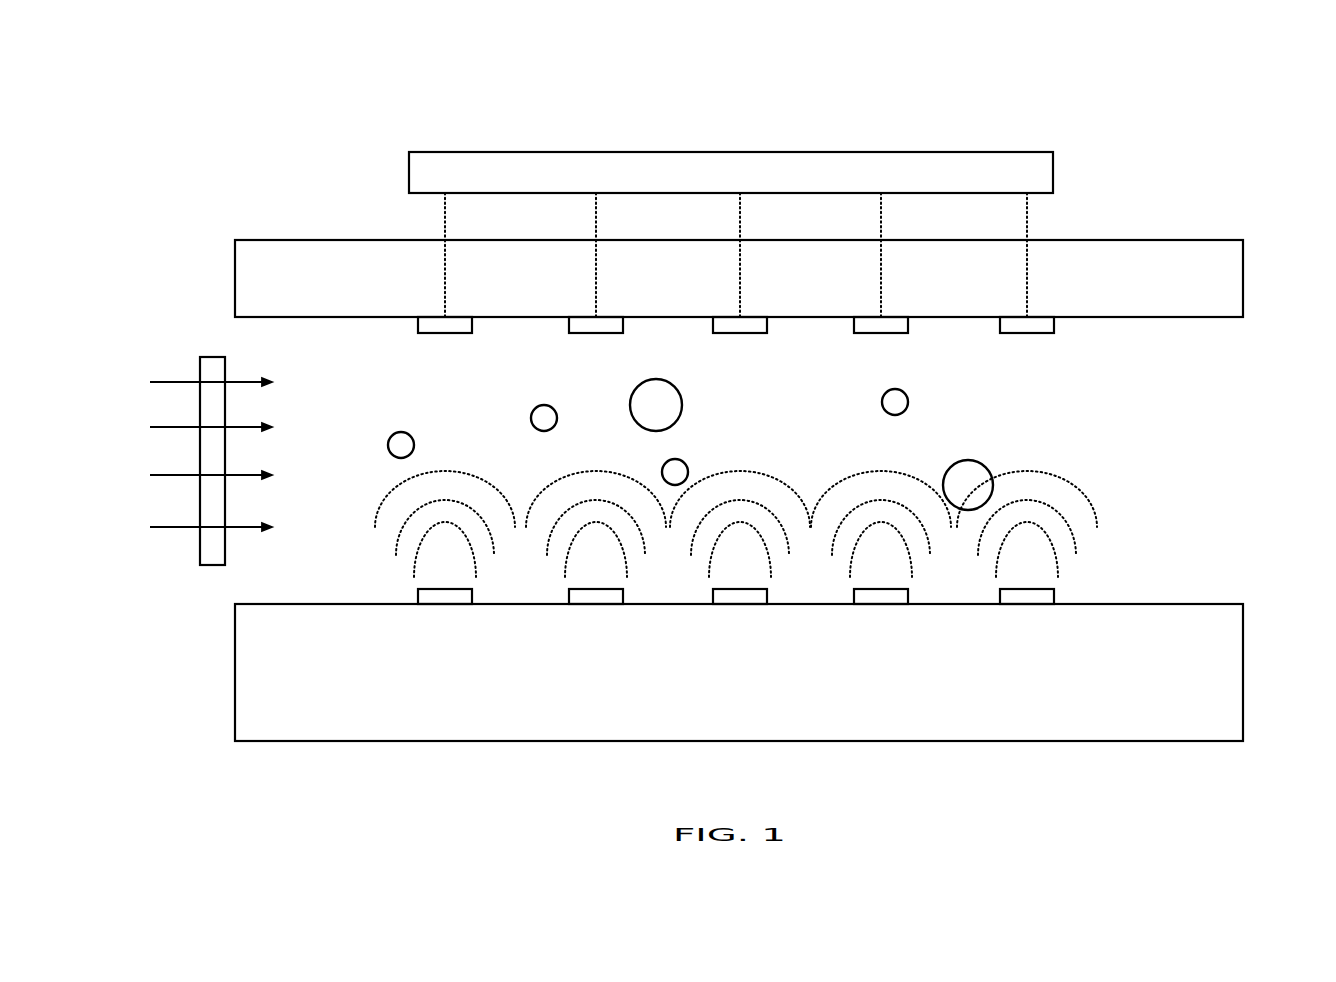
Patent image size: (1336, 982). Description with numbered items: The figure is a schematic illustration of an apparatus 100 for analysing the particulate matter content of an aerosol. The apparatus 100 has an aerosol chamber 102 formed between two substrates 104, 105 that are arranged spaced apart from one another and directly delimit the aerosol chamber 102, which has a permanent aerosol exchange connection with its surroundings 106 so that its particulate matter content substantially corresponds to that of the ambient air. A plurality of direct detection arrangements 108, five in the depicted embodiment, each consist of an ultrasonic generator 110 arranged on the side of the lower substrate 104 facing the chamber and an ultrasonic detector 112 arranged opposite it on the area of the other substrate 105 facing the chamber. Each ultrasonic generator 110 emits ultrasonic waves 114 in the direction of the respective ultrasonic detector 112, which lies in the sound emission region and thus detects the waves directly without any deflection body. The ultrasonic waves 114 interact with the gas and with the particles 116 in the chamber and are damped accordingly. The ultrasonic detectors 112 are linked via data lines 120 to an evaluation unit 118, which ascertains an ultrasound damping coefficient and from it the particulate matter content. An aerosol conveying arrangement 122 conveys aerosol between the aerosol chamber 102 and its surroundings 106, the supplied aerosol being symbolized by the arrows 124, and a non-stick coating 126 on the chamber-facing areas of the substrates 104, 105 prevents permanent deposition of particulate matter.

The apparatus 100 is at (1133, 115).
The aerosol chamber 102 is at (1218, 440).
The substrate 104 is at (1236, 655).
The substrate 105 is at (1213, 270).
The surroundings 106 is at (1316, 472).
The direct detection arrangement 108 is at (1057, 372).
The ultrasonic generator 110 is at (462, 606).
The ultrasonic detector 112 is at (472, 327).
The ultrasonic waves 114 is at (457, 472).
The particles 116 is at (684, 461).
The evaluation unit 118 is at (989, 173).
The data lines 120 is at (448, 230).
The aerosol conveying arrangement 122 is at (212, 357).
The arrows 124 is at (173, 384).
The non-stick coating 126 is at (1178, 320).